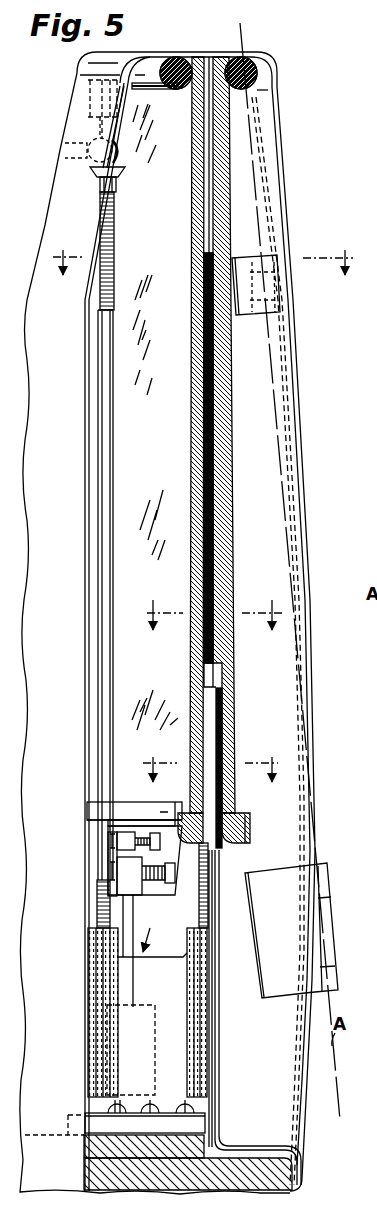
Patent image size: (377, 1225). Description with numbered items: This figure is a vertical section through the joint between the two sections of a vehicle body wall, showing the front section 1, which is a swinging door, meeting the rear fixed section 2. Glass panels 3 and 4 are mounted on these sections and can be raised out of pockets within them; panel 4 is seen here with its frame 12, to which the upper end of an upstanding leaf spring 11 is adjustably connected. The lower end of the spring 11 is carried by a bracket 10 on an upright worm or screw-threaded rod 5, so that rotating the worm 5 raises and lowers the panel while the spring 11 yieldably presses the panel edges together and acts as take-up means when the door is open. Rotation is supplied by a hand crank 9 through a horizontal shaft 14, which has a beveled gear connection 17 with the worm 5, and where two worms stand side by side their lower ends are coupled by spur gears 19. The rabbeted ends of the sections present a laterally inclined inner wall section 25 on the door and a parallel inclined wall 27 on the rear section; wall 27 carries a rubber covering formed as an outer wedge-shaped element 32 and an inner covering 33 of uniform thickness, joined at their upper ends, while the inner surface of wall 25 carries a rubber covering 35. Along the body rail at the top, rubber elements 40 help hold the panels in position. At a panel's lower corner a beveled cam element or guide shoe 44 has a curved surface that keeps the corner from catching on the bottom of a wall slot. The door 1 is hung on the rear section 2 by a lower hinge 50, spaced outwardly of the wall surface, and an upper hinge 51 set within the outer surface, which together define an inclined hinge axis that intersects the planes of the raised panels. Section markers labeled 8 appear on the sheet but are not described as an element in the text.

The front section 1 is at (298, 352).
The rear fixed section 2 is at (155, 633).
The panel 3 is at (230, 346).
The panel 4 is at (155, 417).
The worm 5 is at (115, 268).
The section line 8 is at (203, 251).
The hand crank 9 is at (214, 606).
The bracket 10 is at (198, 847).
The leaf spring 11 is at (132, 916).
The frame 12 is at (123, 802).
The horizontal shaft 14 is at (68, 147).
The beveled gear connection 17 is at (88, 167).
The spur gear 19 is at (97, 1120).
The inner wall section 25 is at (218, 1035).
The laterally inclined wall 27 is at (208, 1012).
The outer wedge-shaped element 32 is at (217, 530).
The inner covering 33 is at (203, 410).
The rubber covering 35 is at (222, 848).
The rubber element 40 is at (183, 56).
The cam element 44 is at (252, 827).
The lower hinge 50 is at (317, 867).
The upper hinge 51 is at (260, 257).